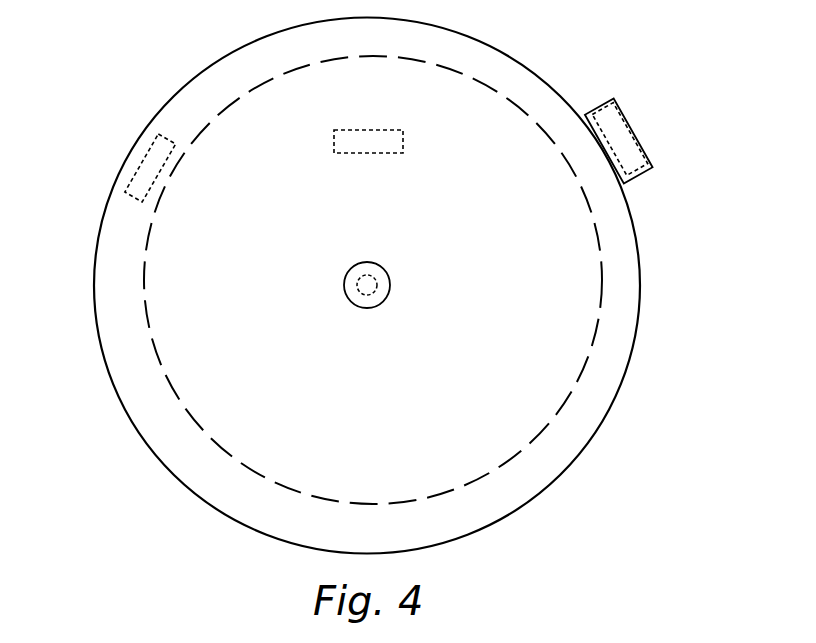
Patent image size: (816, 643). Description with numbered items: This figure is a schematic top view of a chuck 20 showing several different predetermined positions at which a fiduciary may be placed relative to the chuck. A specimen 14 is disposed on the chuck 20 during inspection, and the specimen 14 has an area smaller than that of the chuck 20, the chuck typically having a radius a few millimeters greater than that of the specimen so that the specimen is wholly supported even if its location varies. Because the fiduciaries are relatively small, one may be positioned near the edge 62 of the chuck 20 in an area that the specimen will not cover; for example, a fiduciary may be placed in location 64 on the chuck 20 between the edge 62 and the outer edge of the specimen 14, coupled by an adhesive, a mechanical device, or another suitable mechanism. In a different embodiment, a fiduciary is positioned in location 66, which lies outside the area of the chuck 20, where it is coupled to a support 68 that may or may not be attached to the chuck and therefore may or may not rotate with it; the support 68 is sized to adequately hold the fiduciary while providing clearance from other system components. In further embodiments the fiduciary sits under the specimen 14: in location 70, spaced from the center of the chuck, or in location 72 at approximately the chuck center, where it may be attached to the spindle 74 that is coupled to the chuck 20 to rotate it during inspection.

The specimen 14 is at (603, 268).
The chuck 20 is at (612, 357).
The edge 62 is at (108, 200).
The location 64 is at (152, 170).
The location 66 is at (632, 163).
The support 68 is at (638, 139).
The location 70 is at (403, 140).
The location 72 is at (375, 278).
The spindle 74 is at (385, 302).